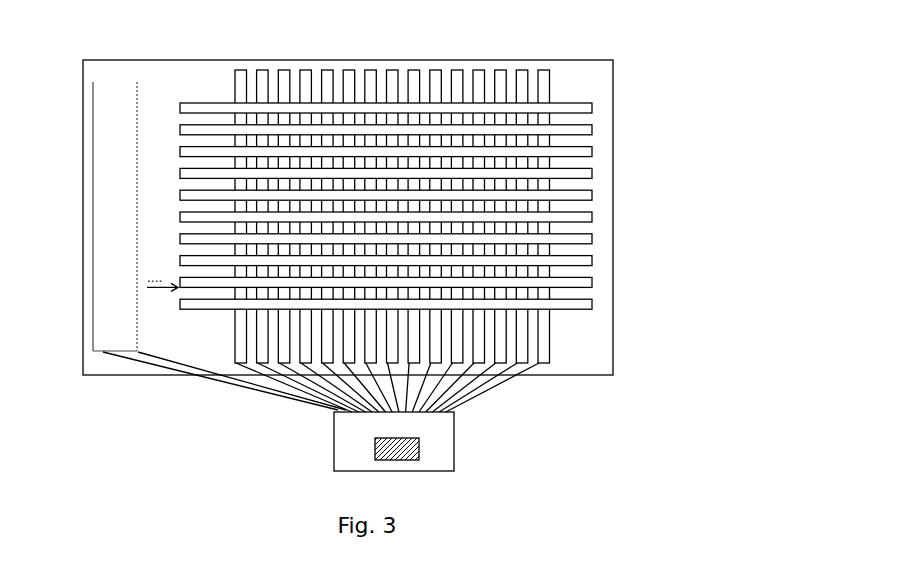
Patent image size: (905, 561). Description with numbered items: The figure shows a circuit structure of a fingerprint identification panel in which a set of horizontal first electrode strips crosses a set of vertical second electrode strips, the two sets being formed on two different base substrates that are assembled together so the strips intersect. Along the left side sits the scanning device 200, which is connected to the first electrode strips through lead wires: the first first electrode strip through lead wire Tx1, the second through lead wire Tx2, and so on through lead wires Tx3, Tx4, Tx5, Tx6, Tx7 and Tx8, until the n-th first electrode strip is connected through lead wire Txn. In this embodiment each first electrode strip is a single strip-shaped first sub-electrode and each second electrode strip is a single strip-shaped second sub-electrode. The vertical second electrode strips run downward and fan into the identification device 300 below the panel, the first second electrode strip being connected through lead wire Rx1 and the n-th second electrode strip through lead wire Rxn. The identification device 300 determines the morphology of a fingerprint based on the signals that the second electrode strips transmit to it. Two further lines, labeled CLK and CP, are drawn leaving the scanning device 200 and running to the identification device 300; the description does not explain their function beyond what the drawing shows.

The scanning device 200 is at (107, 288).
The identification device 300 is at (440, 452).
The lead wire Tx1 is at (171, 117).
The lead wire Tx2 is at (171, 139).
The third transmitting electrode Tx3 is at (171, 161).
The fourth transmitting electrode Tx4 is at (171, 182).
The fifth transmitting electrode Tx5 is at (171, 204).
The sixth transmitting electrode Tx6 is at (171, 226).
The seventh transmitting electrode Tx7 is at (171, 248).
The eighth transmitting electrode Tx8 is at (171, 270).
The lead wire Txn is at (171, 313).
The lead wire Rx1 is at (280, 241).
The lead wire Rxn is at (510, 241).
The clock signal line CLK is at (218, 381).
The control pulse signal line CP is at (242, 378).